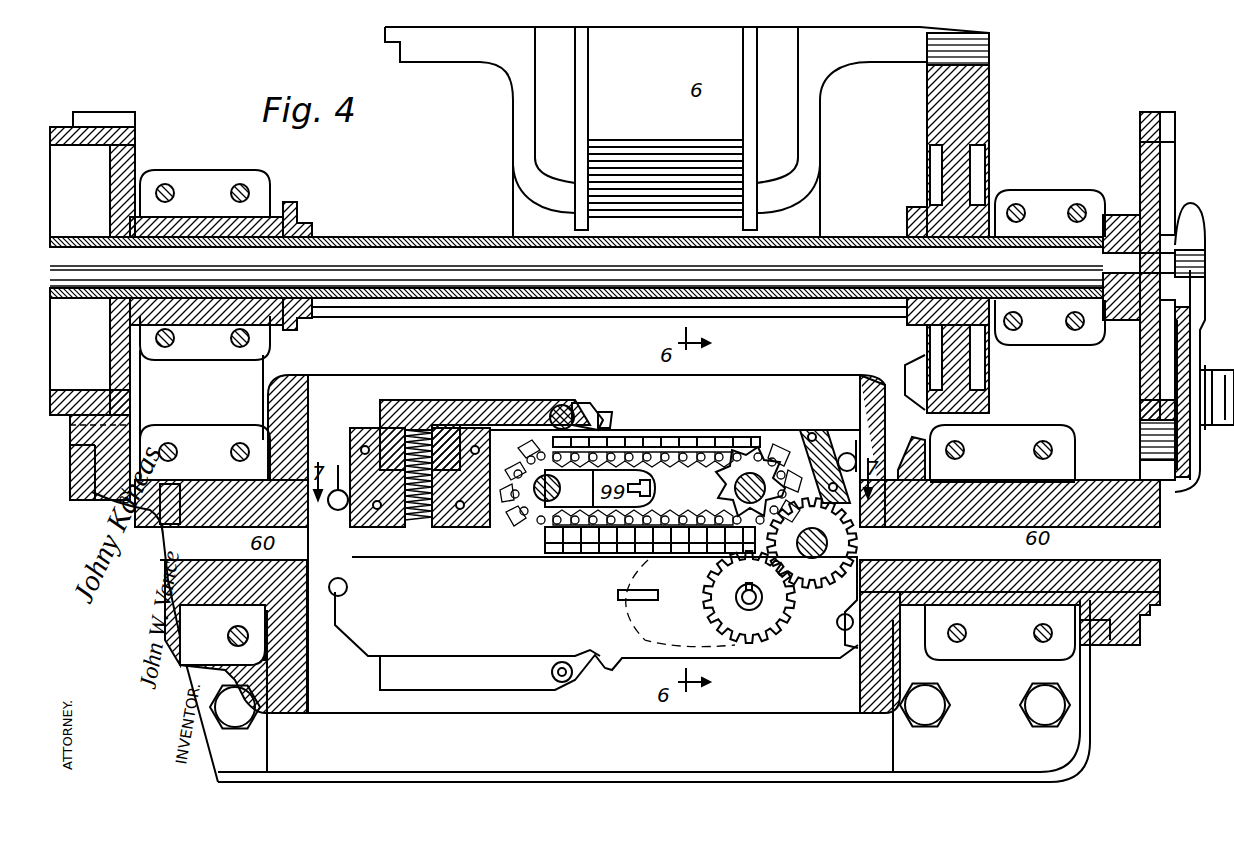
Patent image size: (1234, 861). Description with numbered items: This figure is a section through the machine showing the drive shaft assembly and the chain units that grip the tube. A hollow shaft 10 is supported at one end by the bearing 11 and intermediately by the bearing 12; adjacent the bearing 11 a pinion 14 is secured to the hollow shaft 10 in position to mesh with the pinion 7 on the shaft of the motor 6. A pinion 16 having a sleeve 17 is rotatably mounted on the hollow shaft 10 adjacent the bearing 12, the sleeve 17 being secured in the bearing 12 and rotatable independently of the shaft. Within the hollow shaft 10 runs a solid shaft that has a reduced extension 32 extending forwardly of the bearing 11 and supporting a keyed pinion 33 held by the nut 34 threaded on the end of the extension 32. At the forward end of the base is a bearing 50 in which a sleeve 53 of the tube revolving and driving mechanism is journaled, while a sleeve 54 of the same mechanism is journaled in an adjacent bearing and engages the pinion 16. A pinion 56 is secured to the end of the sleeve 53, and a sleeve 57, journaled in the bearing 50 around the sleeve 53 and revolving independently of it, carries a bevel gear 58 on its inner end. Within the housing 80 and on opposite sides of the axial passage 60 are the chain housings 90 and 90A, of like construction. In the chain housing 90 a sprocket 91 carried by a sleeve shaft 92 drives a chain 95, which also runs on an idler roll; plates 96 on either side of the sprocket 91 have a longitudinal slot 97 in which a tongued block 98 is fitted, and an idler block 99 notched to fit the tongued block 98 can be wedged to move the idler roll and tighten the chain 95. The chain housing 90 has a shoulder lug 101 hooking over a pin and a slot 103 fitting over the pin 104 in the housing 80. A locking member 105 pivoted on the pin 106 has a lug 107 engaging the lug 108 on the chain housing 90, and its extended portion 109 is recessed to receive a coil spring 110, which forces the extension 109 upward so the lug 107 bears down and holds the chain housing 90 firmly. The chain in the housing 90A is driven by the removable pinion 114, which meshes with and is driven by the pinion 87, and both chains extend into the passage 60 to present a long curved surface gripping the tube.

The motor 6 is at (651, 218).
The pinion 7 is at (990, 48).
The hollow shaft 10 is at (365, 236).
The bearing 11 is at (1050, 200).
The bearing 12 is at (200, 180).
The pinion 14 is at (985, 140).
The pinion 16 is at (138, 134).
The sleeve 17 is at (286, 204).
The reduced extension 32 is at (1112, 258).
The pinion 33 is at (1170, 142).
The nut 34 is at (1203, 256).
The bearing 50 is at (627, 268).
The sleeve 53 is at (985, 486).
The sleeve 54 is at (180, 512).
The pinion 56 is at (1140, 632).
The sleeve 57 is at (1000, 488).
The bevel gear 58 is at (920, 440).
The axial passage 60 is at (660, 543).
The housing 80 is at (300, 386).
The pinion 87 is at (818, 578).
The chain housing 90 is at (365, 445).
The chain housing 90A is at (350, 635).
The sprocket 91 is at (766, 470).
The sleeve shaft 92 is at (750, 470).
The chain 95 is at (705, 438).
The plate 96 is at (738, 500).
The longitudinal slot 97 is at (662, 524).
The tongued block 98 is at (656, 490).
The idler block 99 is at (600, 488).
The shoulder lug 101 is at (338, 465).
The slot 103 is at (855, 446).
The pin 104 is at (826, 440).
The locking member 105 is at (490, 400).
The pin 106 is at (565, 405).
The lug 107 is at (598, 410).
The lug 108 is at (604, 418).
The extended portion 109 is at (445, 435).
The coil spring 110 is at (420, 430).
The removable pinion 114 is at (786, 612).